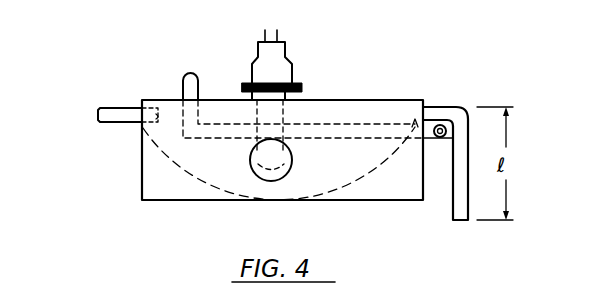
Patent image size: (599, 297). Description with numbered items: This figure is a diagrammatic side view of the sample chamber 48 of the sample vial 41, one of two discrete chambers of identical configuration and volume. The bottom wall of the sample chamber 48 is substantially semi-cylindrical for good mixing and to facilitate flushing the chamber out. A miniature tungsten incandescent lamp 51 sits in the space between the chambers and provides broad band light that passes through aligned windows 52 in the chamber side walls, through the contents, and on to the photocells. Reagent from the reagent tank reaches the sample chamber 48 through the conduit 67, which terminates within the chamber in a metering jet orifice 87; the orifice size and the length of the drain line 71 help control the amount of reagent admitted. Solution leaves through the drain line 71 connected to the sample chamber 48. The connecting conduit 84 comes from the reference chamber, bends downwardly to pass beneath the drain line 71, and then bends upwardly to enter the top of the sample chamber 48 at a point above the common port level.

The sample vial 41 is at (124, 183).
The sample chamber 48 is at (379, 168).
The incandescent lamp 51 is at (293, 68).
The window 52 is at (250, 160).
The conduit 67 is at (112, 108).
The drain line 71 is at (453, 196).
The connecting conduit 84 is at (192, 73).
The metering jet orifice 87 is at (152, 112).